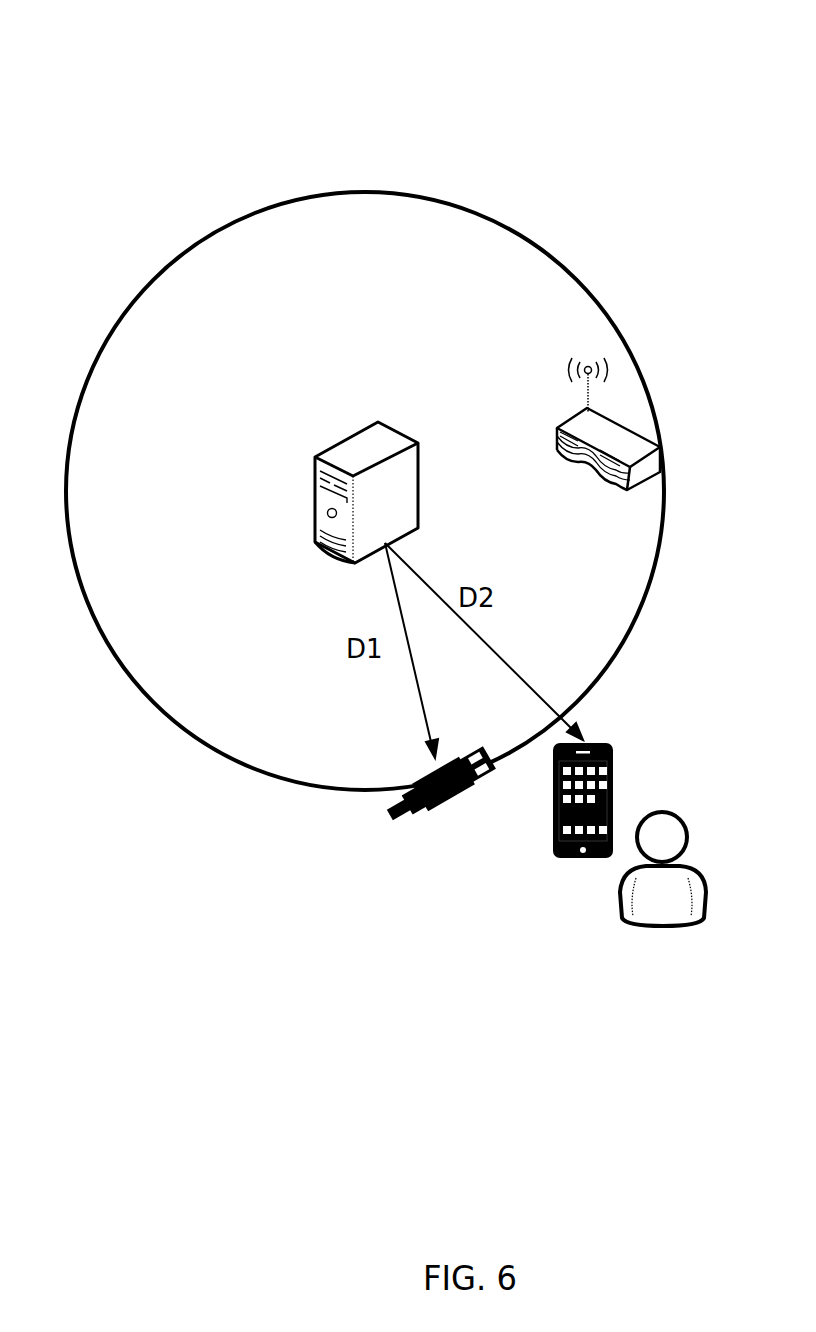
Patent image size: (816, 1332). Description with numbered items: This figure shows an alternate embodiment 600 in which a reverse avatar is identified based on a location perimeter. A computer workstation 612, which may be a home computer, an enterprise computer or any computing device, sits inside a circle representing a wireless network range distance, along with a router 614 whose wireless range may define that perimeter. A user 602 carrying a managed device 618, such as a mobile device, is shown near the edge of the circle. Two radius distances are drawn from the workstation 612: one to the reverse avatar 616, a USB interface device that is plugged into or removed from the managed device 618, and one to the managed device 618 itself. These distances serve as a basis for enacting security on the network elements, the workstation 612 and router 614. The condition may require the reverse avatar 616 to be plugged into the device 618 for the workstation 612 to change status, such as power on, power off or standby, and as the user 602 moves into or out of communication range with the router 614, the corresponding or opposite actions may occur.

The alternate embodiment with reverse avatar identified by location perimeter 600 is at (63, 38).
The user 602 is at (666, 897).
The computer workstation 612 is at (354, 484).
The router 614 is at (608, 441).
The reverse avatar 616 is at (435, 802).
The managed device 618 is at (579, 819).